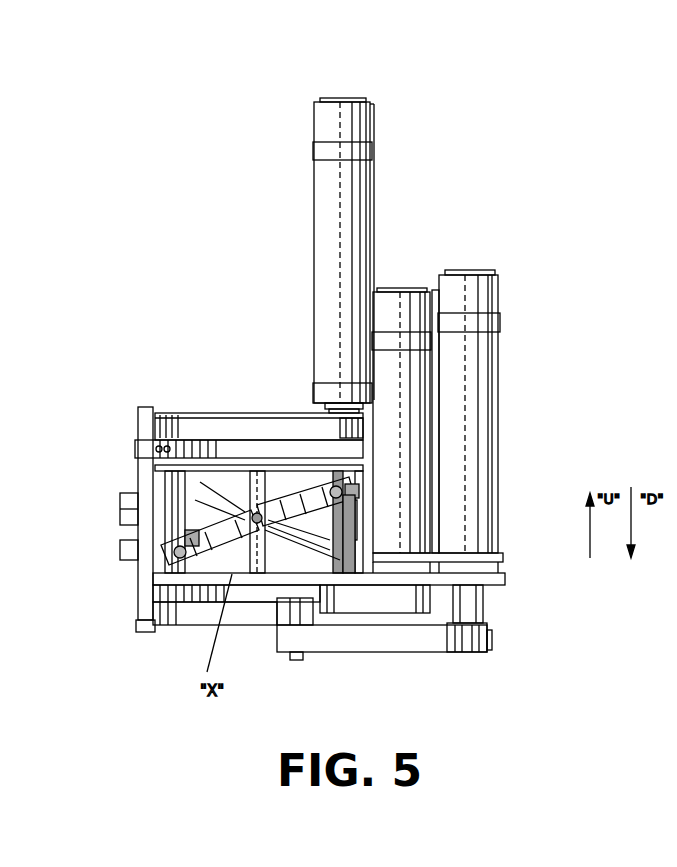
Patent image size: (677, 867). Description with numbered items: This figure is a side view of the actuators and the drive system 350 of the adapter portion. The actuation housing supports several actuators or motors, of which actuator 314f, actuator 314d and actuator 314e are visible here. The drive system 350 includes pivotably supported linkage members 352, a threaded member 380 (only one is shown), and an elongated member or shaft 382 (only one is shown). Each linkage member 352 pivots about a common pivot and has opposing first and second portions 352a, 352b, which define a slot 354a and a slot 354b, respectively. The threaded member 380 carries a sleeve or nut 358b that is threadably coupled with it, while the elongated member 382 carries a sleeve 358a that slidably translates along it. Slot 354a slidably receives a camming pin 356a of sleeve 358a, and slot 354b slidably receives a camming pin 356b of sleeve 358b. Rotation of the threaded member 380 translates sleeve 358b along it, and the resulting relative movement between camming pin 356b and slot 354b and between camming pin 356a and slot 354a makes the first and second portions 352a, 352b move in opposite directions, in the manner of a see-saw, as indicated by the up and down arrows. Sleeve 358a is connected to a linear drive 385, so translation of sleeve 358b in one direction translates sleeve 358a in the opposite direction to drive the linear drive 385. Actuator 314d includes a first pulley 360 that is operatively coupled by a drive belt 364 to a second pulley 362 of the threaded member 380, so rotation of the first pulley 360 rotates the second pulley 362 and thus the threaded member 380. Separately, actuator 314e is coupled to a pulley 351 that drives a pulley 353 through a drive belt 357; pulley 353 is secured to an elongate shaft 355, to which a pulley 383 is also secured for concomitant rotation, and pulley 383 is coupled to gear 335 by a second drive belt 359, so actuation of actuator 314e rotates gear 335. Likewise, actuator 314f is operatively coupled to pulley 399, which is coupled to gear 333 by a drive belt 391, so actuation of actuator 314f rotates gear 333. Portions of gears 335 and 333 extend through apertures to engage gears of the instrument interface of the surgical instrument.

The actuator or motor 314f is at (336, 213).
The actuator or motor 314d is at (390, 300).
The actuator or motor 314e is at (478, 352).
The drive belt 391 is at (268, 430).
The pulley 399 is at (330, 410).
The pivotably supported linkage member 352 is at (250, 505).
The gear 333 is at (135, 448).
The elongated member or shaft 382 is at (155, 473).
The linear drive 385 is at (120, 497).
The slot 354a is at (165, 538).
The camming pin 356a is at (160, 550).
The sleeve 358a is at (173, 550).
The first portion 352a is at (172, 560).
The slot 354b is at (342, 488).
The sleeve or nut 358b is at (350, 485).
The camming pin 356b is at (335, 496).
The second portion 352b is at (357, 507).
The gear 335 is at (180, 612).
The second drive belt 359 is at (197, 625).
The pulley 383 is at (277, 598).
The drive system 350 is at (263, 645).
The elongate shaft 355 is at (300, 660).
The pulley 353 is at (313, 652).
The second pulley 362 is at (325, 613).
The drive belt 364 is at (367, 602).
The threaded member 380 is at (352, 575).
The first pulley 360 is at (337, 560).
The drive belt 357 is at (447, 640).
The pulley 351 is at (483, 654).